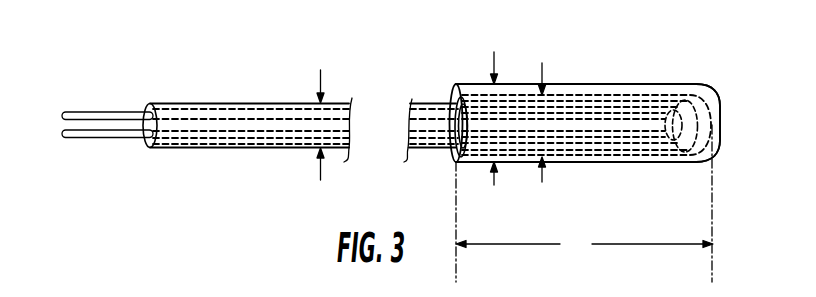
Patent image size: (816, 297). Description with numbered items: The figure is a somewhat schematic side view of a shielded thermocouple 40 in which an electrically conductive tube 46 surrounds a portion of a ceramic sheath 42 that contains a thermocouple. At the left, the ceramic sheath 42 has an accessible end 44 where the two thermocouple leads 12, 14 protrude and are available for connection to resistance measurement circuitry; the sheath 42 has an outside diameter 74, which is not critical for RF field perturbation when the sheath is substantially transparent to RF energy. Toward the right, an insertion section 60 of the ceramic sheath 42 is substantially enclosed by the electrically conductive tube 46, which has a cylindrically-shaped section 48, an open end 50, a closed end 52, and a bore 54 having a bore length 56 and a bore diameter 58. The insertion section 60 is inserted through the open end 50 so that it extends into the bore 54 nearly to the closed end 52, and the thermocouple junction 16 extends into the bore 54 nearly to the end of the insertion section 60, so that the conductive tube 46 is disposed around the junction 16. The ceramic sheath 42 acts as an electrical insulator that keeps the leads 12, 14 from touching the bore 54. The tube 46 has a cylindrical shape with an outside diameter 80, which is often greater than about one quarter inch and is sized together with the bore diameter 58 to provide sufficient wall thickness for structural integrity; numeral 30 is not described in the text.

The thermocouple lead 12 is at (107, 112).
The thermocouple lead 14 is at (80, 138).
The thermocouple junction 16 is at (680, 132).
The cable 30 is at (333, 108).
The shielded thermocouple 40 is at (684, 63).
The ceramic sheath 42 is at (295, 102).
The accessible end 44 is at (150, 148).
The electrically conductive tube 46 is at (580, 84).
The cylindrically-shaped section 48 is at (626, 73).
The open end 50 is at (452, 100).
The closed end 52 is at (722, 125).
The bore 54 is at (583, 157).
The bore length 56 is at (584, 203).
The bore diameter 58 is at (543, 139).
The insertion section 60 is at (587, 100).
The outside diameter of the ceramic sheath 74 is at (320, 142).
The outside diameter 80 is at (495, 138).